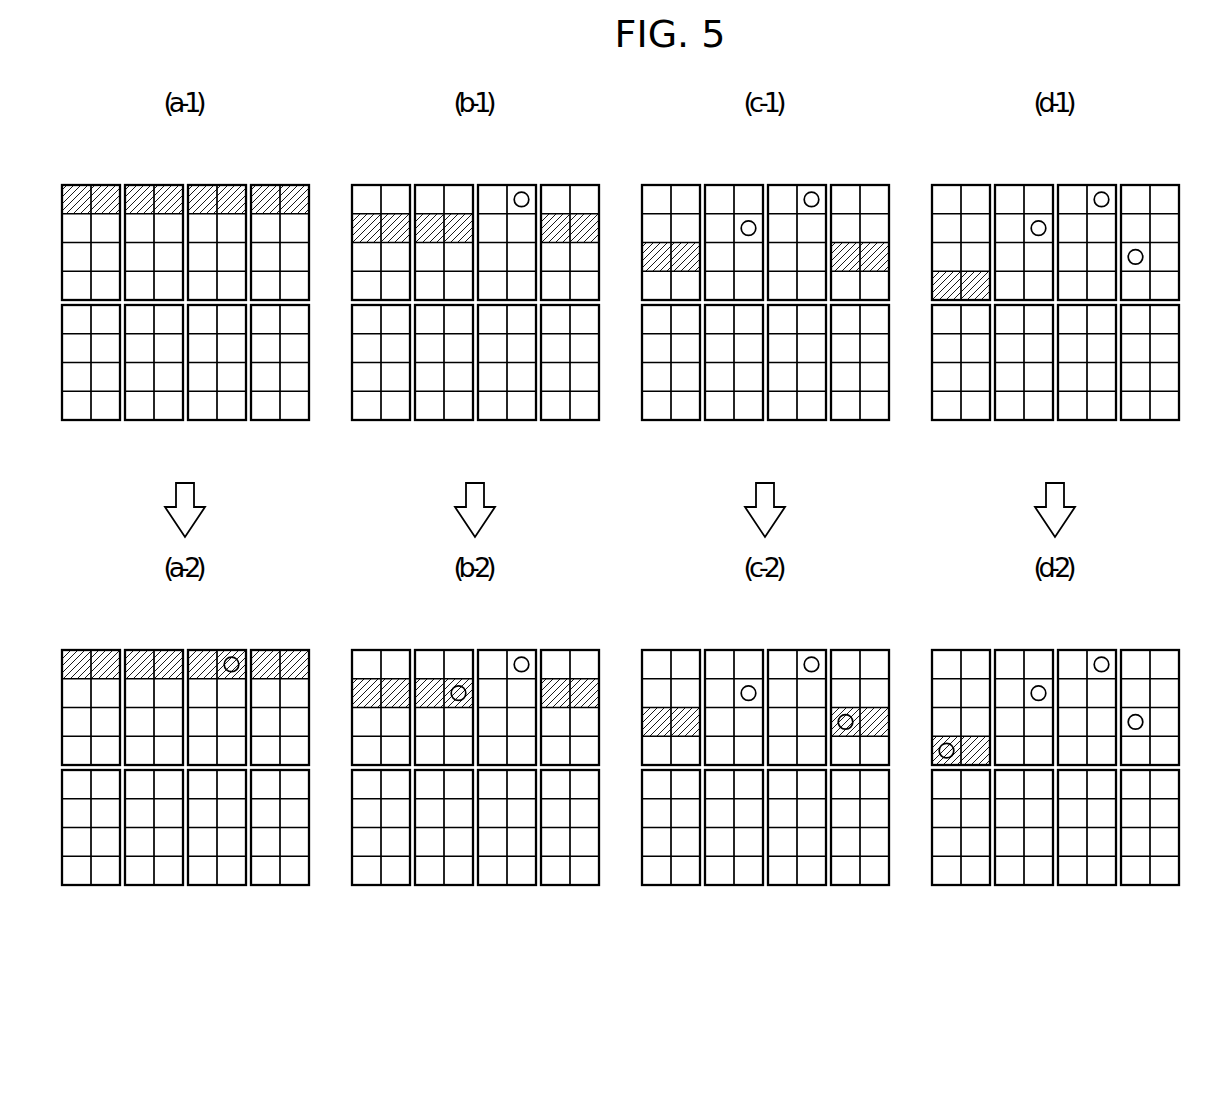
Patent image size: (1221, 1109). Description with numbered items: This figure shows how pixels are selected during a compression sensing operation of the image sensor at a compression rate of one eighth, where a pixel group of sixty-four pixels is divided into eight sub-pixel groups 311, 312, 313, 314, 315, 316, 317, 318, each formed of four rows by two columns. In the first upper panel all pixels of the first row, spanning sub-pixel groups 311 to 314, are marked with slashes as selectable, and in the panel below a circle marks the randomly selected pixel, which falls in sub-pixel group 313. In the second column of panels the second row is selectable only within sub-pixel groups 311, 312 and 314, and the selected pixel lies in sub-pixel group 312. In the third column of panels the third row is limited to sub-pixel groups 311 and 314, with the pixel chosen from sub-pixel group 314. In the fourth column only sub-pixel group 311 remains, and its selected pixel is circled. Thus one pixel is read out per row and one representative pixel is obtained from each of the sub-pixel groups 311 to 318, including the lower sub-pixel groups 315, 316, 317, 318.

The sub-pixel group 311 is at (526, 448).
The sub-pixel group 312 is at (589, 448).
The sub-pixel group 313 is at (652, 448).
The sub-pixel group 314 is at (715, 448).
The sub-pixel group 315 is at (526, 623).
The sub-pixel group 316 is at (589, 623).
The sub-pixel group 317 is at (652, 623).
The sub-pixel group 318 is at (715, 623).